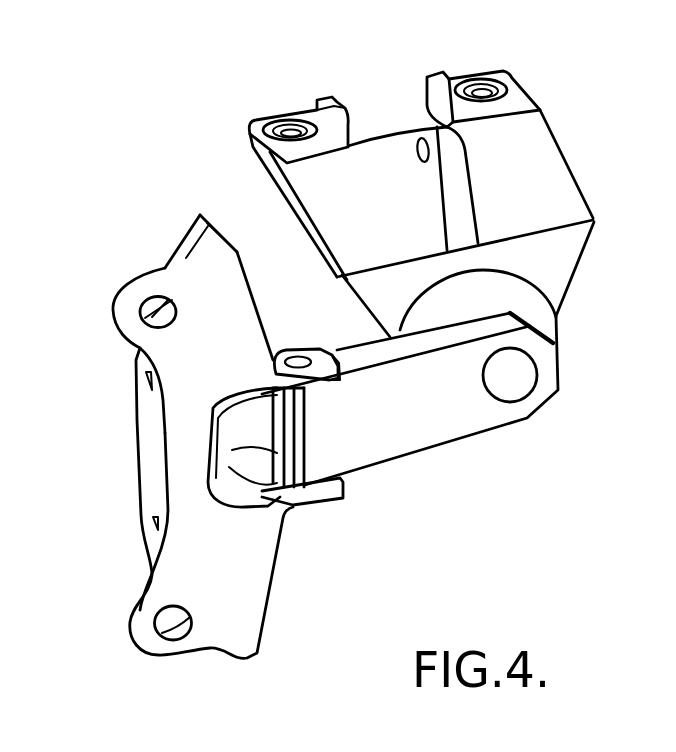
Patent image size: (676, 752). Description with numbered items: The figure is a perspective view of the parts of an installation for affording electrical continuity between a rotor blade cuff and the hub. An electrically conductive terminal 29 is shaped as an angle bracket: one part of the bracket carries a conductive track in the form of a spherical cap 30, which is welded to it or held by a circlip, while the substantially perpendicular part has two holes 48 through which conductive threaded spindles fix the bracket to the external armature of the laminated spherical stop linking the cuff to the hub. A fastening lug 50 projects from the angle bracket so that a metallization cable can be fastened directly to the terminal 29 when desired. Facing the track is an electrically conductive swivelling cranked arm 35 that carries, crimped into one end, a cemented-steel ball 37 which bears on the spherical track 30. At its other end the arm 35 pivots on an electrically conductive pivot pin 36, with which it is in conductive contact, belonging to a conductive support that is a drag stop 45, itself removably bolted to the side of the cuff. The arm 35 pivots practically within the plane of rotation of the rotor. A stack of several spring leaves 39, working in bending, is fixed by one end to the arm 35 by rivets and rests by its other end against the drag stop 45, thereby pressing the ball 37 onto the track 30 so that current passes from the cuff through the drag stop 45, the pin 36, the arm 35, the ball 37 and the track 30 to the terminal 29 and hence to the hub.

The conductive terminal 29 is at (540, 163).
The spherical track 30 is at (507, 292).
The swivelling cranked arm 35 is at (400, 423).
The pivot pin 36 is at (298, 362).
The cemented-steel ball 37 is at (507, 378).
The spring leaves 39 is at (237, 440).
The drag stop 45 is at (225, 563).
The holes 48 is at (291, 134).
The fastening lug 50 is at (447, 157).